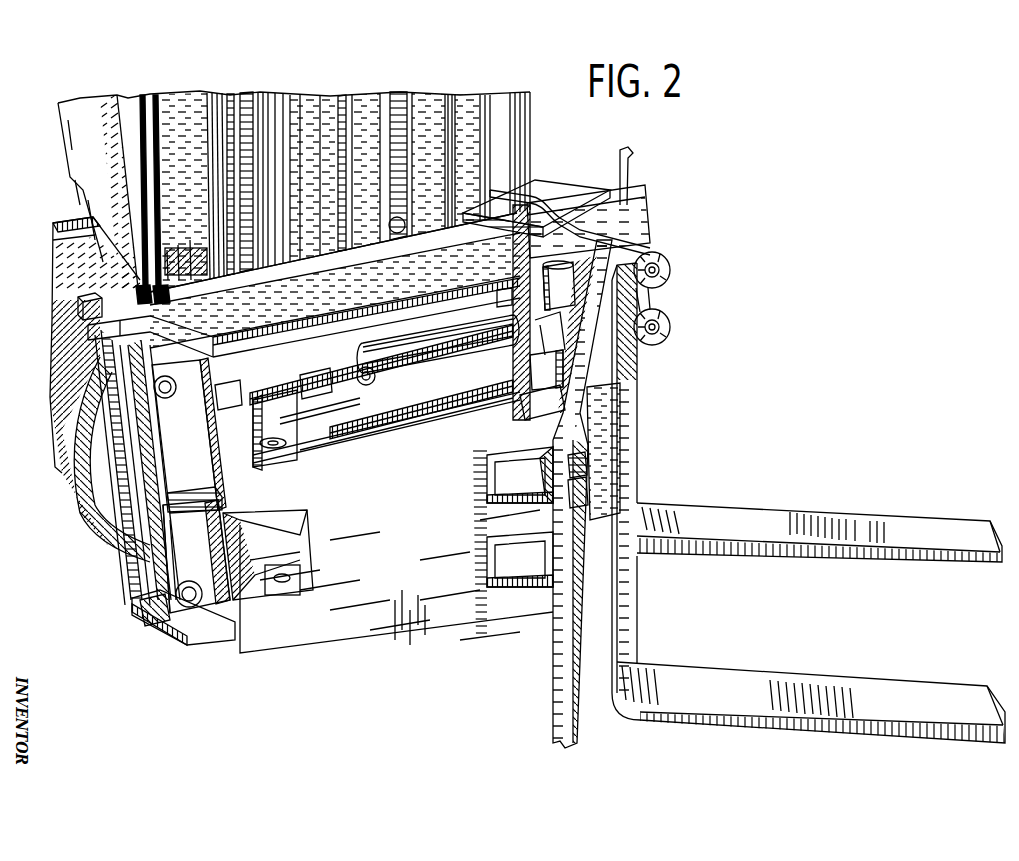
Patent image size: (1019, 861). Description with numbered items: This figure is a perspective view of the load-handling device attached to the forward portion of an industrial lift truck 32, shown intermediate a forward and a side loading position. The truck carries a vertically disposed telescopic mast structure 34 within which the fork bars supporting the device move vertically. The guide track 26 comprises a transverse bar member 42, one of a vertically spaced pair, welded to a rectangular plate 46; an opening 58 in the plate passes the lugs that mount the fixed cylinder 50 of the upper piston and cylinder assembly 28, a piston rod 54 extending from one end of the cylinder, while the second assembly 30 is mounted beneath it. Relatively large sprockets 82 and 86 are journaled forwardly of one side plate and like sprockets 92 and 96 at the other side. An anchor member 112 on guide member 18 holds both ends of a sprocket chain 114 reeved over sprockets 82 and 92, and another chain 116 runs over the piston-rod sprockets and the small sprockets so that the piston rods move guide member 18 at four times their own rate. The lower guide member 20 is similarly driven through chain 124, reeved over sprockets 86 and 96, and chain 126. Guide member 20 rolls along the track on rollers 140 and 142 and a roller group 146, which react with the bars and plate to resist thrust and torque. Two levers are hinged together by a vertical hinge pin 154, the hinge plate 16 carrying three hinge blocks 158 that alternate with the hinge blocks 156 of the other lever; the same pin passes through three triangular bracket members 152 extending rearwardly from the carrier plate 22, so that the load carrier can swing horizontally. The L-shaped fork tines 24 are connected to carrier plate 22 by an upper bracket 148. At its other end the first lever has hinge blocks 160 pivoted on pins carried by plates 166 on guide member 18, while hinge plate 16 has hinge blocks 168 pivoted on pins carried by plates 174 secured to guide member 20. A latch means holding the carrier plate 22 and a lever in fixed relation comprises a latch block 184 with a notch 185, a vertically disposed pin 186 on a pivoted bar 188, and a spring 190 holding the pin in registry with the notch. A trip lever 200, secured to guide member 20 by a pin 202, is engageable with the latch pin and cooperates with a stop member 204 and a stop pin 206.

The hinge plate 16 is at (405, 618).
The guide member 18 is at (556, 214).
The guide member 20 is at (180, 550).
The carrier plate 22 is at (553, 652).
The fork tines 24 is at (783, 555).
The guide track 26 is at (662, 185).
The hydraulic cylinder and piston assembly 28 is at (388, 425).
The hydraulic cylinder and piston assembly 30 is at (445, 405).
The industrial lift truck 32 is at (67, 352).
The telescopic mast structure 34 is at (455, 105).
The bar member 42 is at (396, 302).
The rectangular plate 46 is at (592, 205).
The fixed cylinder 50 is at (445, 375).
The piston rod 54 is at (340, 404).
The opening 58 is at (362, 368).
The relatively large sprocket 82 is at (670, 263).
The relatively large sprocket 86 is at (670, 322).
The sprocket 92 is at (133, 480).
The sprocket 96 is at (165, 545).
The anchor member 112 is at (507, 266).
The sprocket chain 114 is at (310, 372).
The sprocket chain 116 is at (282, 382).
The sprocket chain 124 is at (273, 545).
The sprocket chain 126 is at (425, 422).
The roller 140 is at (100, 395).
The roller 142 is at (157, 582).
The roller group 146 is at (160, 610).
The upper bracket 148 is at (580, 430).
The bracket members 152 is at (545, 450).
The hinge pin 154 is at (547, 351).
The hinge blocks 156 is at (520, 450).
The hinge blocks 158 is at (545, 437).
The hinge blocks 160 is at (549, 296).
The plates 166 is at (497, 297).
The hinge blocks 168 is at (275, 462).
The plates 174 is at (177, 497).
The latch block 184 is at (585, 463).
The notch 185 is at (586, 495).
The pin 186 is at (258, 425).
The bar 188 is at (200, 393).
The spring 190 is at (226, 392).
The trip lever 200 is at (230, 345).
The pin 202 is at (225, 333).
The stop member 204 is at (78, 298).
The stop pin 206 is at (88, 333).